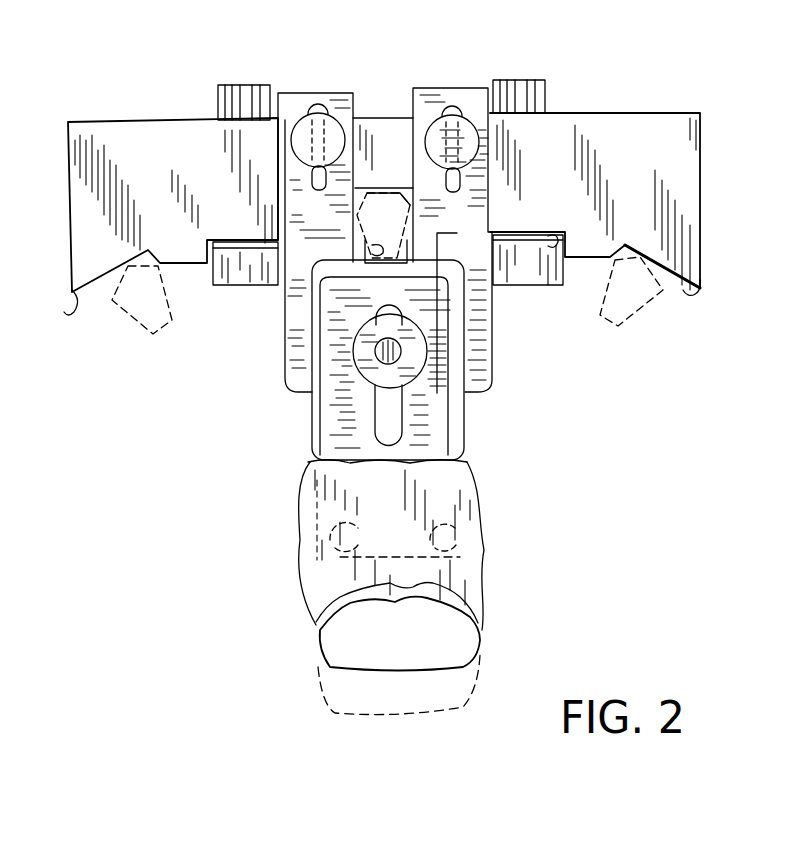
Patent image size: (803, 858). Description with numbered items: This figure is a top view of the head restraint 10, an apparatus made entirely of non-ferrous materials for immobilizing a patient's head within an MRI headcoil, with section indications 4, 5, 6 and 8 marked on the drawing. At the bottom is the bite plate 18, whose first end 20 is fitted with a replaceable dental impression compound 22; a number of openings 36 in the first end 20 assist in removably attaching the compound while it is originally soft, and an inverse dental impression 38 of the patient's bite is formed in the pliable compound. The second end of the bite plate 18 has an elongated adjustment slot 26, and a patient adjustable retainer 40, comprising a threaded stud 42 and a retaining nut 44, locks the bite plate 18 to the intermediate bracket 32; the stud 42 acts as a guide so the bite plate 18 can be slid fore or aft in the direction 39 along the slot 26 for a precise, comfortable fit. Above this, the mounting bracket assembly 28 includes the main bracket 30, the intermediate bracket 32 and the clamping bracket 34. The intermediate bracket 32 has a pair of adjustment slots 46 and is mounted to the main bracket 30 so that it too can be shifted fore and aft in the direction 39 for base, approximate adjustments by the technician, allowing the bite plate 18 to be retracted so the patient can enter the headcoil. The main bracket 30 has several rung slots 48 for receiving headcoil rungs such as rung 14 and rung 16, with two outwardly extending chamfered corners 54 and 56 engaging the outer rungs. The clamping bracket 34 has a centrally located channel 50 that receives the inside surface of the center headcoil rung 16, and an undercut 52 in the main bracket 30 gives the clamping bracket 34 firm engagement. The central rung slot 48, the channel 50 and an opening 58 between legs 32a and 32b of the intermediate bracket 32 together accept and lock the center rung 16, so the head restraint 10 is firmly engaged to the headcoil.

The section line 4- 4 is at (380, 18).
The section line 5- 5 is at (398, 23).
The section line 6- 6 is at (250, 145).
The section line 8- 8 is at (207, 355).
The head restraint 10 is at (240, 489).
The headcoil rung 14 is at (152, 310).
The headcoil rung 16 is at (394, 232).
The bite plate 18 is at (633, 300).
The first end 20 is at (445, 483).
The dental impression compound 22 is at (480, 583).
The elongated adjustment slot 26 is at (378, 430).
The mounting bracket assembly 28 is at (585, 330).
The main bracket 30 is at (632, 174).
The intermediate bracket 32 is at (475, 305).
The leg 32a is at (293, 105).
The leg 32b is at (447, 97).
The clamping bracket 34 is at (222, 288).
The openings 36 is at (395, 535).
The inverse dental impression 38 is at (478, 622).
The fore or aft direction 39 is at (357, 701).
The patient adjustable retainer 40 is at (331, 360).
The threaded stud 42 is at (383, 352).
The retaining nut 44 is at (380, 383).
The adjustment slots 46 is at (445, 185).
The rung slots 48 is at (103, 310).
The channel 50 is at (372, 247).
The undercut 52 is at (560, 240).
The chamfered corner 54 is at (80, 316).
The chamfered corner 56 is at (697, 293).
The opening 58 is at (370, 92).